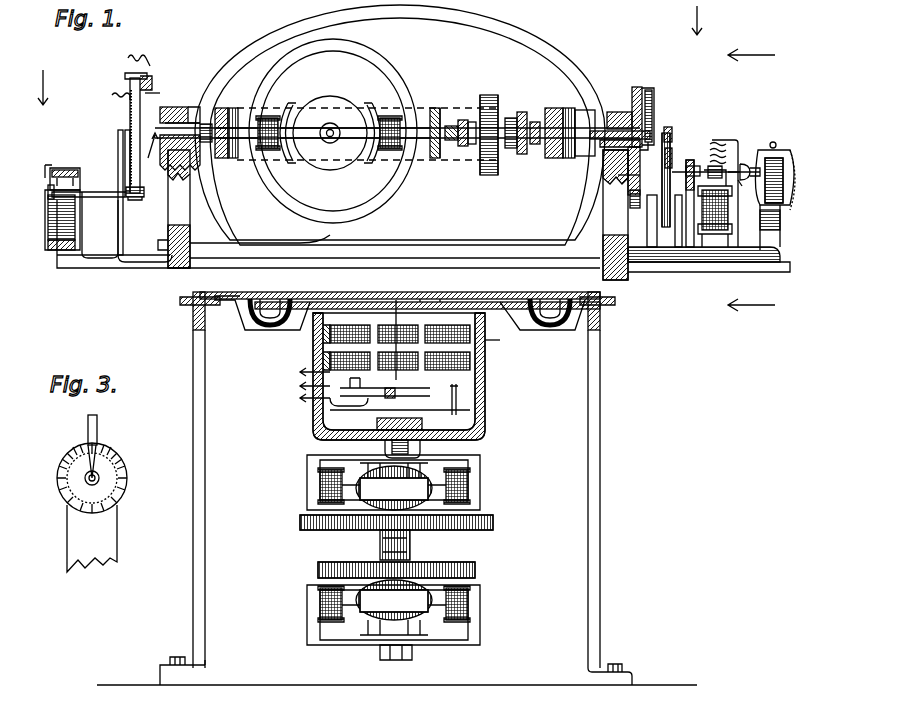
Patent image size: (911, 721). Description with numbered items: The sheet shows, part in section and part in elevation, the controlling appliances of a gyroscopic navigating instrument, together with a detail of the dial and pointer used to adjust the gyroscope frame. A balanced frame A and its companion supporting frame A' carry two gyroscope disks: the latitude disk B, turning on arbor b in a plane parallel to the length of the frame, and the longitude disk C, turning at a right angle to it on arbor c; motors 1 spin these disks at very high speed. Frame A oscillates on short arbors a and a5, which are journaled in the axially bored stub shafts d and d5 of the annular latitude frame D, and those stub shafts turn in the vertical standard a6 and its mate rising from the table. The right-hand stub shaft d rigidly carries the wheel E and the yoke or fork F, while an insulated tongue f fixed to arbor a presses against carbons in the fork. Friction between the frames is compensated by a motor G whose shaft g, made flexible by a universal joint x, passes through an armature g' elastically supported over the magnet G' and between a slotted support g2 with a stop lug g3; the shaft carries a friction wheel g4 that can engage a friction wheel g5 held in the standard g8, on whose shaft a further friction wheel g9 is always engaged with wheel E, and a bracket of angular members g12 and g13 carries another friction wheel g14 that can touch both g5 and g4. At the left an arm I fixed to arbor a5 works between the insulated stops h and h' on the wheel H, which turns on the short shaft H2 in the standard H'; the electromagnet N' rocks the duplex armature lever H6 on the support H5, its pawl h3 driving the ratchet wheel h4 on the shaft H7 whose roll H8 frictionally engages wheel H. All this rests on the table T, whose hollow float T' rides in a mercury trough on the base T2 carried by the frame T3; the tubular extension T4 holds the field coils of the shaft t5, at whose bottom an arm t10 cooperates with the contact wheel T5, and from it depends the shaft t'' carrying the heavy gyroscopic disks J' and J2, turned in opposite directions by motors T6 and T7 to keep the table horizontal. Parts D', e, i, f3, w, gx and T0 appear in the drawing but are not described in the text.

In FIG. 1, the latitude frame D is at (400, 125).
In FIG. 1, the latitude gyroscope disk B is at (333, 131).
In FIG. 1, the motor 1 is at (330, 133).
In FIG. 1, the shaft or arbor b is at (334, 131).
In FIG. 1, the balanced frame A is at (405, 140).
In FIG. 1, the shaft hub D' is at (519, 100).
In FIG. 1, the supporting frame A' is at (499, 142).
In FIG. 1, the washer e is at (452, 142).
In FIG. 1, the longitude gyroscope disk C is at (490, 95).
In FIG. 1, the shaft or arbor c is at (551, 118).
In FIG. 1, the stub shaft d5 is at (200, 108).
In FIG. 1, the arbor a5 is at (176, 122).
In FIG. 1, the vertical standard a6 is at (185, 236).
In FIG. 3, the vertical standard a6 is at (110, 539).
In FIG. 1, the controlling wheel H is at (128, 133).
In FIG. 1, the stop h' is at (153, 71).
In FIG. 1, the stop h is at (149, 75).
In FIG. 1, the arm I is at (142, 104).
In FIG. 3, the arm I is at (97, 428).
In FIG. 1, the short shaft H2 is at (126, 126).
In FIG. 1, the standard H' is at (132, 196).
In FIG. 1, the index i is at (151, 150).
In FIG. 3, the index i is at (97, 455).
In FIG. 1, the plain wheel or roll H8 is at (137, 198).
In FIG. 1, the shaft H7 is at (108, 197).
In FIG. 1, the support H5 is at (82, 228).
In FIG. 1, the electromagnet N' is at (47, 220).
In FIG. 1, the pawl h3 is at (52, 178).
In FIG. 1, the duplex armature lever H6 is at (63, 170).
In FIG. 1, the ratchet wheel h4 is at (50, 195).
In FIG. 1, the arbor a is at (605, 160).
In FIG. 3, the arbor a is at (70, 480).
In FIG. 1, the stub shaft d is at (605, 128).
In FIG. 1, the yoke or fork F is at (625, 114).
In FIG. 1, the wheel E is at (634, 86).
In FIG. 1, the spring slot f3 is at (650, 90).
In FIG. 1, the arm or tongue f is at (649, 128).
In FIG. 1, the friction wheel g9 is at (630, 200).
In FIG. 1, the contact w is at (612, 210).
In FIG. 1, the standard g8 is at (642, 229).
In FIG. 1, the friction wheel g5 is at (665, 228).
In FIG. 1, the angular member g12 is at (670, 128).
In FIG. 1, the angular member g13 is at (672, 150).
In FIG. 1, the friction wheel g14 is at (675, 168).
In FIG. 1, the bifurcated support g2 is at (678, 248).
In FIG. 1, the post gx is at (690, 248).
In FIG. 1, the stop pin or lug g3 is at (690, 166).
In FIG. 1, the magnet G' is at (715, 232).
In FIG. 1, the armature g' is at (726, 180).
In FIG. 1, the friction wheel g4 is at (720, 166).
In FIG. 1, the motor shaft g is at (744, 159).
In FIG. 1, the universal joint x is at (741, 191).
In FIG. 1, the motor G is at (775, 171).
In FIG. 1, the table T is at (400, 291).
In FIG. 1, the hollow float T' is at (402, 299).
In FIG. 1, the bracket T0 is at (240, 318).
In FIG. 1, the tubular extension T4 is at (578, 312).
In FIG. 1, the frame T3 is at (193, 365).
In FIG. 1, the supporting base T2 is at (399, 376).
In FIG. 1, the shaft t5 is at (400, 318).
In FIG. 1, the arm t10 is at (402, 396).
In FIG. 1, the contact wheel T5 is at (436, 403).
In FIG. 1, the electric motor T7 is at (480, 418).
In FIG. 1, the shaft t'' is at (438, 438).
In FIG. 1, the electric motor T6 is at (407, 482).
In FIG. 1, the gyroscopic disk J' is at (380, 523).
In FIG. 1, the gyroscopic disk J2 is at (318, 572).